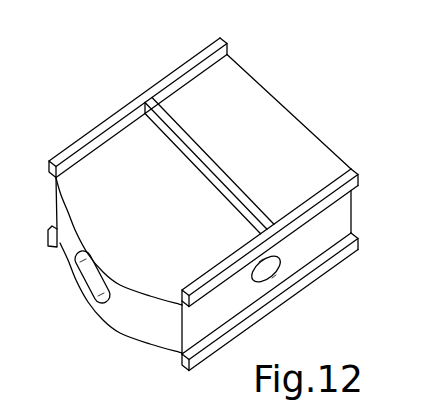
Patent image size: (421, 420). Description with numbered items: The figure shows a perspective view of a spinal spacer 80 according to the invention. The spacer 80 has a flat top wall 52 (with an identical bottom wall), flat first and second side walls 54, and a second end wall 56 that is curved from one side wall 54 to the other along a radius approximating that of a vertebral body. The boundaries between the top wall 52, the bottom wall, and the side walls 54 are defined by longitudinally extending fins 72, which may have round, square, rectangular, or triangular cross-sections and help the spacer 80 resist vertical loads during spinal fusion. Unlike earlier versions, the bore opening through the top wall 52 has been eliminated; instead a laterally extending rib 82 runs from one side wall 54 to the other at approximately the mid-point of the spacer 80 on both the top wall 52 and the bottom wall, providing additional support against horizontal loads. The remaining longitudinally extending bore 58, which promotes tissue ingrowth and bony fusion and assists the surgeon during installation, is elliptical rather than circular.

The spacer 80 is at (299, 89).
The top wall 52 is at (302, 143).
The side wall 54 is at (242, 297).
The second end wall 56 is at (136, 322).
The bore 58 is at (268, 271).
The fins 72 is at (173, 73).
The rib 82 is at (202, 154).